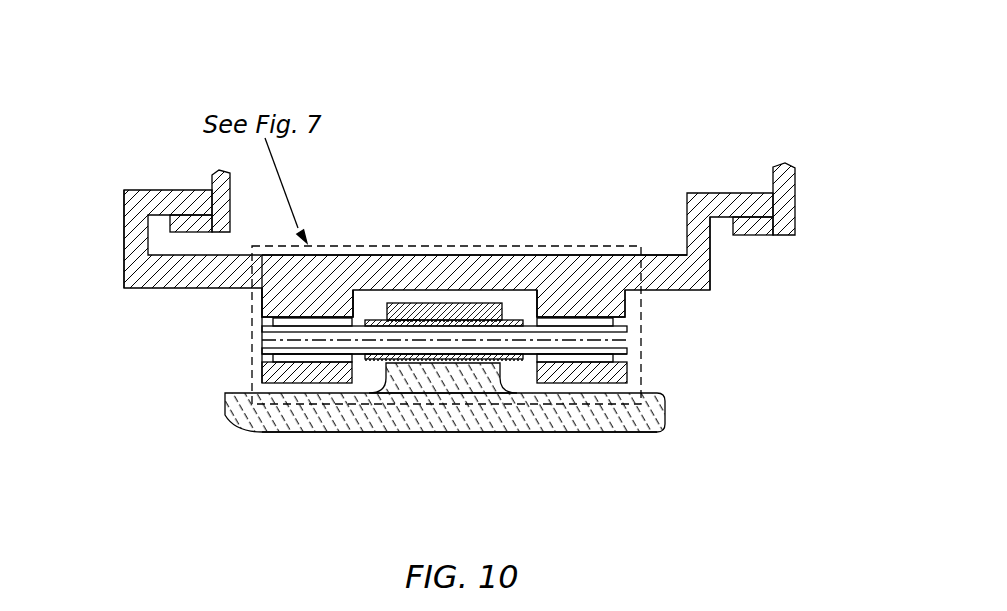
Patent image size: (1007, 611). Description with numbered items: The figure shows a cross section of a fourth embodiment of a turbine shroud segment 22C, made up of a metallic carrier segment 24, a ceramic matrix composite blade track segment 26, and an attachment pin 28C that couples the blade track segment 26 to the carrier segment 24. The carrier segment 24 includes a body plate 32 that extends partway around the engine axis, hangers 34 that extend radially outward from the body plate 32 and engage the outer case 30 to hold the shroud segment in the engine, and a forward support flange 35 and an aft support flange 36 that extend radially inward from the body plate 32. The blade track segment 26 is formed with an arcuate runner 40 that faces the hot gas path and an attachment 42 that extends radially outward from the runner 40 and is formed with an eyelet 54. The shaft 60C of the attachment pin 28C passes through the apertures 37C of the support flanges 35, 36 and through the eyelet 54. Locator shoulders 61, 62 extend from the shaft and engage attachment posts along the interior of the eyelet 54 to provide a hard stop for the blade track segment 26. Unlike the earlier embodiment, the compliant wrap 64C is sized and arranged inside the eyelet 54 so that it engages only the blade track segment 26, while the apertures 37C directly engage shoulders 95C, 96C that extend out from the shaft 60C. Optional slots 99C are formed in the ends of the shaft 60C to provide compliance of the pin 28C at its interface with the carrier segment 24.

The turbine shroud segment 22C is at (176, 135).
The carrier segment 24 is at (604, 244).
The blade track segment 26 is at (631, 453).
The attachment pin 28C is at (641, 355).
The outer case 30 is at (808, 183).
The body plate 32 is at (527, 244).
The hangers 34 is at (110, 233).
The forward support flange 35 is at (248, 308).
The aft support flange 36 is at (641, 307).
The apertures 37C is at (352, 312).
The runner 40 is at (579, 446).
The attachment 42 is at (460, 288).
The eyelet 54 is at (423, 318).
The shaft 60C is at (281, 344).
The locator shoulder 61 is at (391, 293).
The locator shoulder 62 is at (494, 303).
The compliant wrap 64C is at (424, 378).
The shoulder 95C is at (249, 367).
The shoulder 96C is at (640, 372).
The slots 99C is at (618, 341).